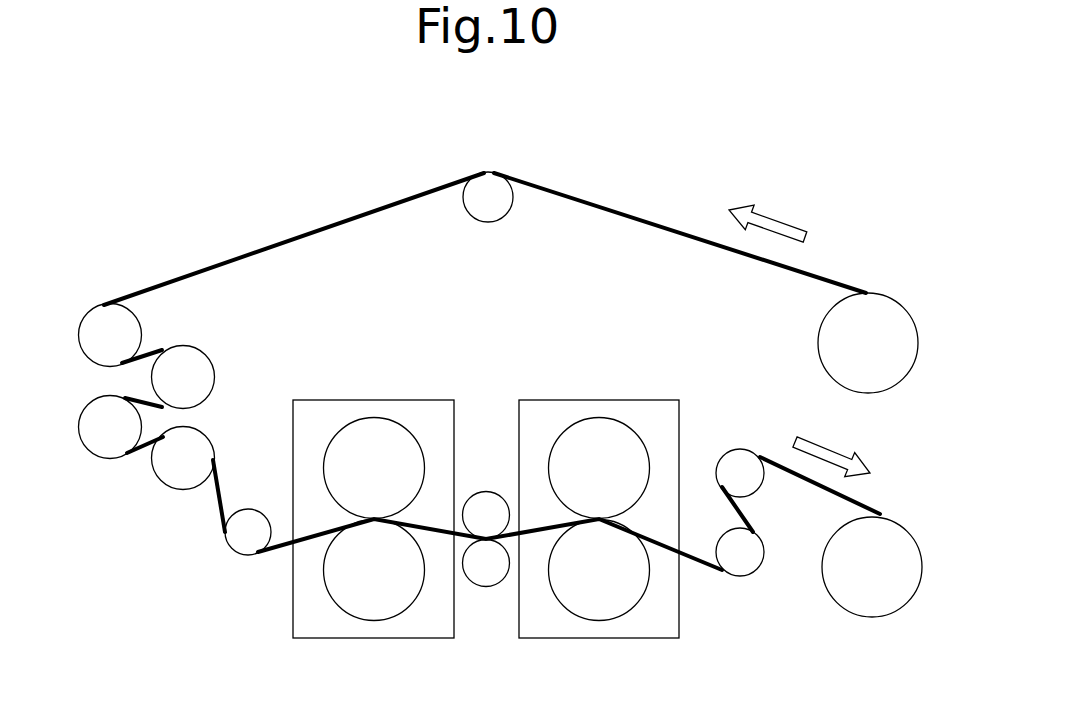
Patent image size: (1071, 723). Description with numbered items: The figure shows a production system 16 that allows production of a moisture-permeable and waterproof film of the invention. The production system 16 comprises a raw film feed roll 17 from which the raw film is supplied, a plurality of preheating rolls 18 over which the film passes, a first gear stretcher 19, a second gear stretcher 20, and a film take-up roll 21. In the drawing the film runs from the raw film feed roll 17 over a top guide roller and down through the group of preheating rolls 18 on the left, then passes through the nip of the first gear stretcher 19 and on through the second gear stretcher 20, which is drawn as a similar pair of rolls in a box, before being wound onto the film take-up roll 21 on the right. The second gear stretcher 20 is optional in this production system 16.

The production system 16 is at (179, 191).
The raw film feed roll 17 is at (895, 325).
The preheating rolls 18 is at (95, 418).
The first gear stretcher 19 is at (413, 410).
The second gear stretcher 20 is at (643, 410).
The film take-up roll 21 is at (897, 543).